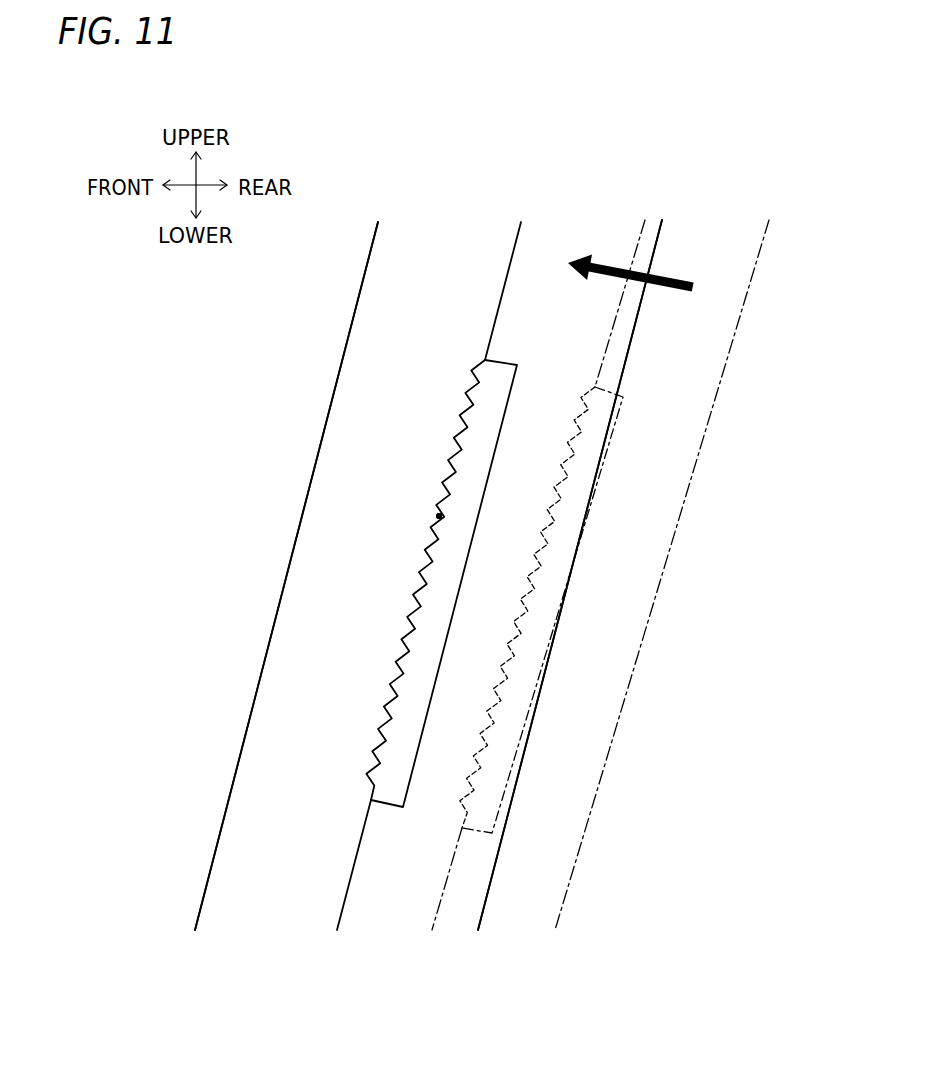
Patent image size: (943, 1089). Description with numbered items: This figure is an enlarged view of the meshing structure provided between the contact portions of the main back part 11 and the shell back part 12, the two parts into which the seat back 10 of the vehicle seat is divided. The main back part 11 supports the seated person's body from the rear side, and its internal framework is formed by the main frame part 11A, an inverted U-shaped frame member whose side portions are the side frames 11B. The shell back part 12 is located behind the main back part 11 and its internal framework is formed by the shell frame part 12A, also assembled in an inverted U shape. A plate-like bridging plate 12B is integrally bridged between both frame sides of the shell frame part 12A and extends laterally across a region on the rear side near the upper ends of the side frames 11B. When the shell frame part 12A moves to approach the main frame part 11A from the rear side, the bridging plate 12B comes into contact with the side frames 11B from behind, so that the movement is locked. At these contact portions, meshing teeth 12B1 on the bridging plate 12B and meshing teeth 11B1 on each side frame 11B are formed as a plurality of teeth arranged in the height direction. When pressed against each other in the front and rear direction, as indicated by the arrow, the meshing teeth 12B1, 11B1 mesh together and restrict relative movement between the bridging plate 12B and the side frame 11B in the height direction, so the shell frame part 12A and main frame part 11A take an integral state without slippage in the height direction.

The seat back 10 is at (235, 397).
The main back part 11 is at (403, 305).
The main frame part 11A is at (350, 543).
The side frame 11B is at (425, 580).
The shell back part 12 is at (568, 335).
The shell frame part 12A is at (553, 365).
The bridging plate 12B is at (475, 452).
The meshing teeth 11B1 is at (440, 517).
The meshing teeth 12B1 is at (708, 529).